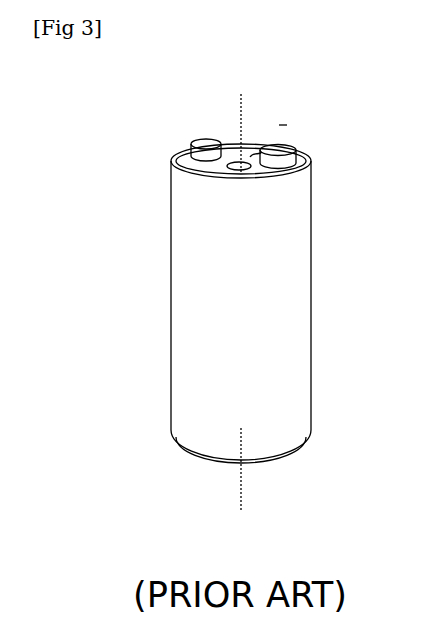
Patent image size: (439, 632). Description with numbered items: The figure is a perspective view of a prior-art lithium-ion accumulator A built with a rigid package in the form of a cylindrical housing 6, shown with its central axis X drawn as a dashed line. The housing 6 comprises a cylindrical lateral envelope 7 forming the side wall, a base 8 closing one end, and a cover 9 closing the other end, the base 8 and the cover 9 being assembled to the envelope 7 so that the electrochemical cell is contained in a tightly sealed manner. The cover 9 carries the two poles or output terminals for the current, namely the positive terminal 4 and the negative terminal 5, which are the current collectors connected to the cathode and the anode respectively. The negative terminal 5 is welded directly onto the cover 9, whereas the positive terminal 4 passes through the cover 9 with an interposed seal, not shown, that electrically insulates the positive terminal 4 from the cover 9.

The cylindrical battery cell (prior art) A is at (132, 361).
The central axis X is at (239, 290).
The positive terminal 4 is at (195, 136).
The negative terminal 5 is at (291, 143).
The housing 6 is at (278, 312).
The cylindrical lateral envelope 7 is at (308, 382).
The base 8 is at (200, 455).
The cover 9 is at (310, 152).